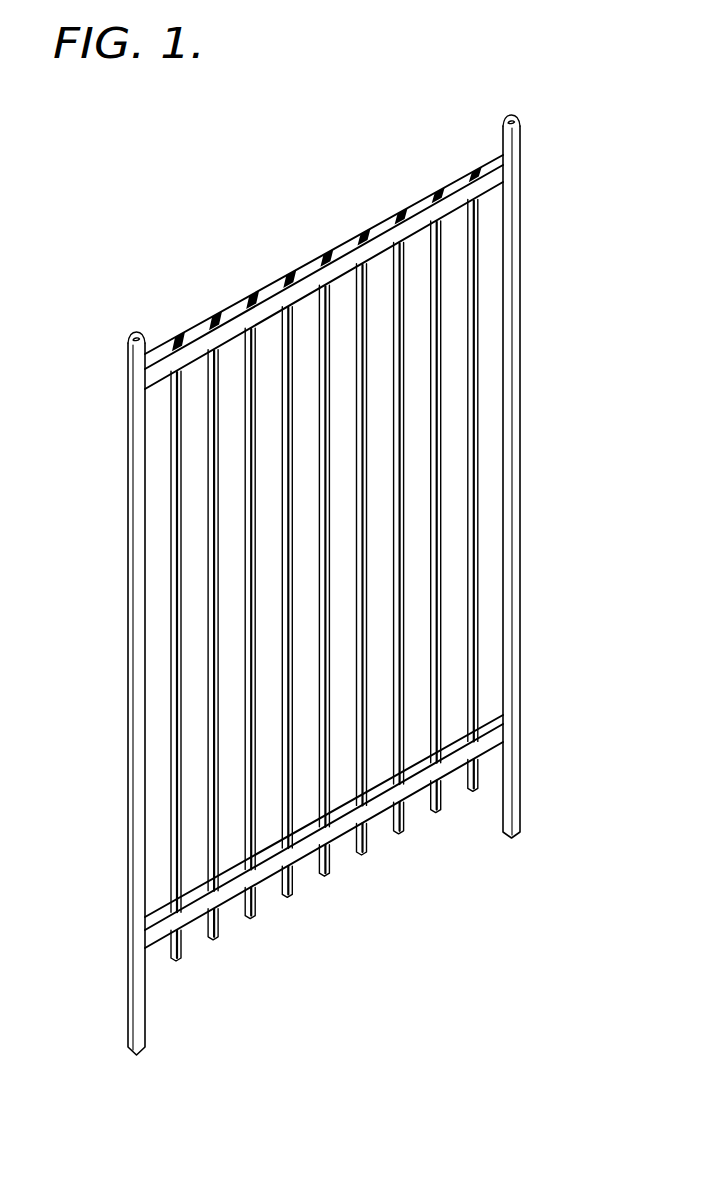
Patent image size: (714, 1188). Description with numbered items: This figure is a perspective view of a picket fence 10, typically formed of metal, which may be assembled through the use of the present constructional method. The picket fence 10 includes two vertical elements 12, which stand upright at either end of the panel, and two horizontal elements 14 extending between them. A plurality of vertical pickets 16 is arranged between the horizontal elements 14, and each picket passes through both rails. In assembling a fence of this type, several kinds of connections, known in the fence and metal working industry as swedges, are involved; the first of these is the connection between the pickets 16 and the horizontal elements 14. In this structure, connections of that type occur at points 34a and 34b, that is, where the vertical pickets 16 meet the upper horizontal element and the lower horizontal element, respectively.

The picket fence 10 is at (361, 1010).
The vertical element 12 is at (520, 347).
The horizontal element 14 is at (232, 313).
The vertical picket 16 is at (448, 550).
The connection point 34a is at (360, 238).
The connection point 34b is at (370, 810).